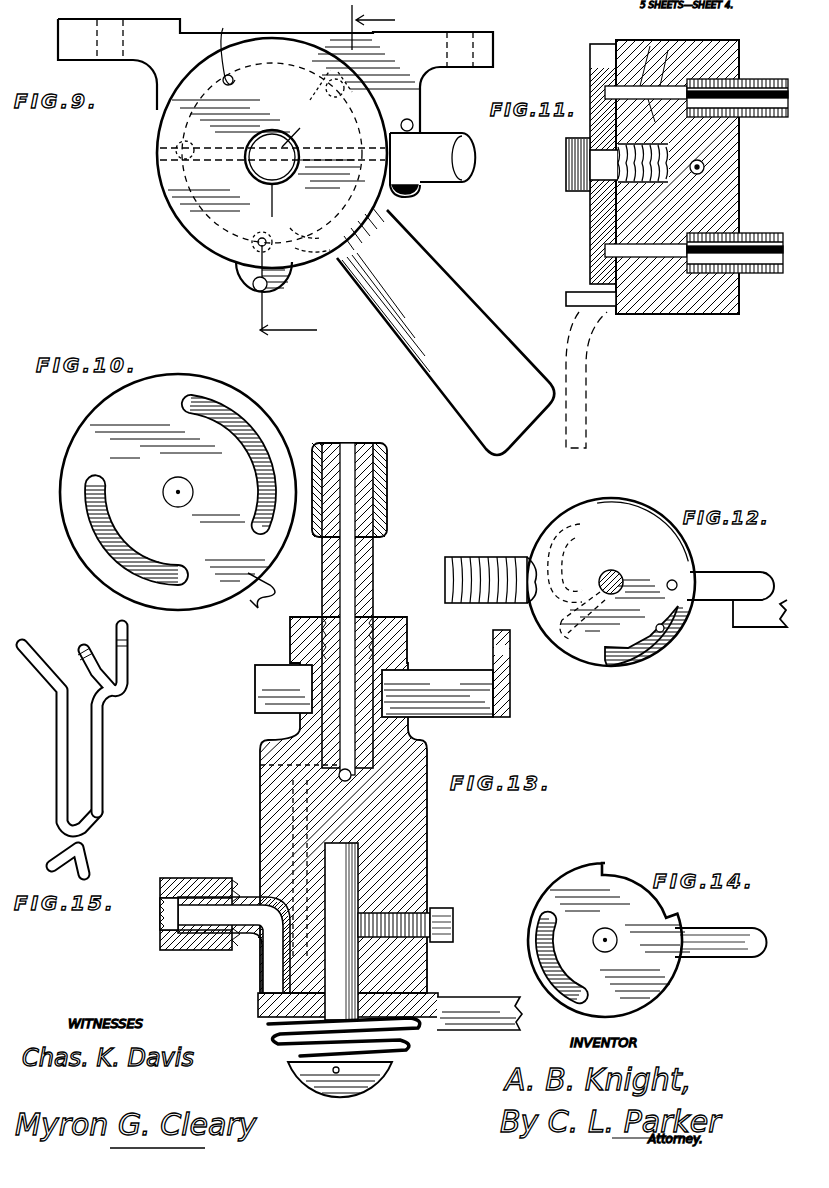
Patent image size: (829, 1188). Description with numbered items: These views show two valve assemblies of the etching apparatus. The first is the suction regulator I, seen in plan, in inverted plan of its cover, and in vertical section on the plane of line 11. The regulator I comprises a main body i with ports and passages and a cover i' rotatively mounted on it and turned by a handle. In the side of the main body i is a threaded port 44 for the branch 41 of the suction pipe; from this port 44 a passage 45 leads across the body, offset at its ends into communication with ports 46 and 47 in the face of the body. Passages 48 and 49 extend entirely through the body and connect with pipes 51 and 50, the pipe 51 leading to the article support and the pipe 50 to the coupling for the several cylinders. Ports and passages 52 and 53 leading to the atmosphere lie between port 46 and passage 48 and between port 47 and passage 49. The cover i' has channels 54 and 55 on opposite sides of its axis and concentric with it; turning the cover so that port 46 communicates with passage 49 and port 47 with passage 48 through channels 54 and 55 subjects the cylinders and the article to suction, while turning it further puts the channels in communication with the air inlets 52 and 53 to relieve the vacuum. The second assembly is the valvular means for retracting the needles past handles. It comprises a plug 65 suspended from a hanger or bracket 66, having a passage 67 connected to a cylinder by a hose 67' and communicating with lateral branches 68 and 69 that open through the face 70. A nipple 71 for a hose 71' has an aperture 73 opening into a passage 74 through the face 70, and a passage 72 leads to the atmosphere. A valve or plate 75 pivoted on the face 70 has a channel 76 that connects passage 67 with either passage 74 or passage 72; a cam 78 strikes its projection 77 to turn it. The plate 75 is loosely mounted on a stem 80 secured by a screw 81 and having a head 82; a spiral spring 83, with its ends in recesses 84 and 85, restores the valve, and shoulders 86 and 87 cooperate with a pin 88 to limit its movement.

In FIG. 9, the branch 41 is at (450, 186).
In FIG. 9, the port 44 is at (275, 76).
In FIG. 9, the passage 45 is at (285, 166).
In FIG. 11, the passage 45 is at (704, 163).
In FIG. 9, the port 46 is at (178, 135).
In FIG. 11, the port 46 is at (566, 160).
In FIG. 9, the port 47 is at (392, 197).
In FIG. 9, the passage 48 is at (325, 85).
In FIG. 11, the passage 48 is at (606, 90).
In FIG. 9, the passage 49 is at (268, 245).
In FIG. 11, the passage 49 is at (668, 252).
In FIG. 9, the pipe 50 is at (281, 232).
In FIG. 11, the pipe 50 is at (735, 273).
In FIG. 9, the pipe 51 is at (318, 52).
In FIG. 11, the pipe 51 is at (740, 84).
In FIG. 9, the port and passage to atmosphere 52 is at (230, 42).
In FIG. 9, the port and passage to atmosphere 53 is at (282, 290).
In FIG. 9, the channel 54 is at (225, 238).
In FIG. 11, the channel 54 is at (606, 250).
In FIG. 10, the channel 54 is at (243, 430).
In FIG. 9, the channel 55 is at (350, 100).
In FIG. 11, the channel 55 is at (600, 100).
In FIG. 10, the channel 55 is at (112, 545).
In FIG. 9, the section line 11 is at (315, 172).
In FIG. 13, the plug 65 is at (423, 862).
In FIG. 13, the hanger or bracket 66 is at (505, 718).
In FIG. 13, the passage 67 is at (371, 612).
In FIG. 12, the passage 67 is at (554, 556).
In FIG. 13, the hose 67' is at (376, 490).
In FIG. 15, the lateral branch 68 is at (103, 750).
In FIG. 15, the lateral branch 69 is at (62, 740).
In FIG. 13, the face of the plug 70 is at (268, 1006).
In FIG. 12, the face of the plug 70 is at (650, 665).
In FIG. 13, the nipple 71 is at (200, 901).
In FIG. 12, the nipple 71 is at (490, 597).
In FIG. 13, the hose 71' is at (147, 940).
In FIG. 15, the passage 72 is at (86, 852).
In FIG. 12, the passage 72 is at (565, 650).
In FIG. 13, the aperture 73 is at (190, 930).
In FIG. 12, the aperture 73 is at (578, 520).
In FIG. 13, the passage 74 is at (270, 965).
In FIG. 13, the valve or plate 75 is at (290, 1048).
In FIG. 12, the valve or plate 75 is at (645, 518).
In FIG. 14, the valve or plate 75 is at (650, 975).
In FIG. 13, the channel 76 is at (358, 1006).
In FIG. 12, the channel 76 is at (580, 559).
In FIG. 14, the channel 76 is at (542, 945).
In FIG. 12, the projection 77 is at (725, 600).
In FIG. 14, the projection 77 is at (718, 928).
In FIG. 13, the cam 78 is at (497, 1017).
In FIG. 12, the cam 78 is at (772, 635).
In FIG. 13, the stem 80 is at (350, 958).
In FIG. 13, the screw 81 is at (445, 912).
In FIG. 13, the head 82 is at (348, 1098).
In FIG. 13, the spiral spring 83 is at (390, 1060).
In FIG. 13, the recess 84 is at (418, 1022).
In FIG. 12, the recess 84 is at (676, 583).
In FIG. 13, the recess 85 is at (324, 1080).
In FIG. 12, the shoulder 86 is at (612, 665).
In FIG. 12, the shoulder 87 is at (668, 628).
In FIG. 12, the pin 88 is at (672, 650).
In FIG. 11, the main body i is at (692, 177).
In FIG. 9, the cover i' is at (243, 153).
In FIG. 11, the cover i' is at (573, 164).
In FIG. 10, the cover i' is at (168, 492).
In FIG. 9, the regulator I is at (101, 177).
In FIG. 11, the regulator I is at (771, 204).